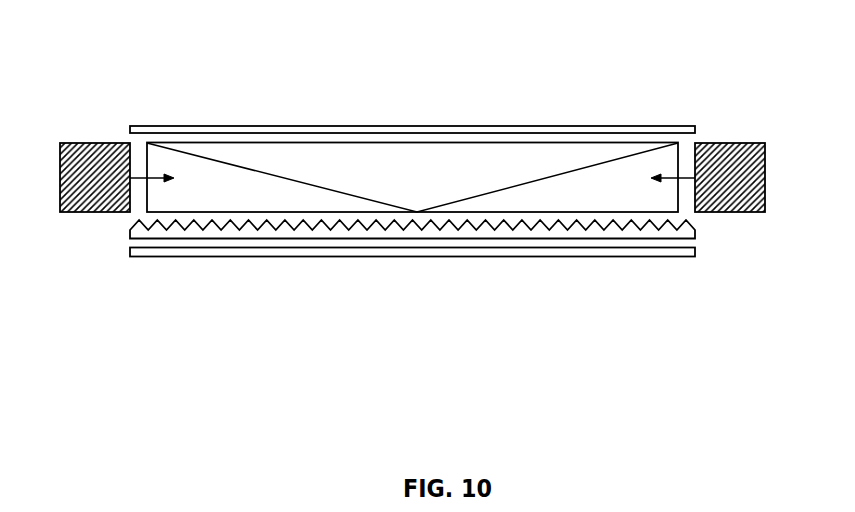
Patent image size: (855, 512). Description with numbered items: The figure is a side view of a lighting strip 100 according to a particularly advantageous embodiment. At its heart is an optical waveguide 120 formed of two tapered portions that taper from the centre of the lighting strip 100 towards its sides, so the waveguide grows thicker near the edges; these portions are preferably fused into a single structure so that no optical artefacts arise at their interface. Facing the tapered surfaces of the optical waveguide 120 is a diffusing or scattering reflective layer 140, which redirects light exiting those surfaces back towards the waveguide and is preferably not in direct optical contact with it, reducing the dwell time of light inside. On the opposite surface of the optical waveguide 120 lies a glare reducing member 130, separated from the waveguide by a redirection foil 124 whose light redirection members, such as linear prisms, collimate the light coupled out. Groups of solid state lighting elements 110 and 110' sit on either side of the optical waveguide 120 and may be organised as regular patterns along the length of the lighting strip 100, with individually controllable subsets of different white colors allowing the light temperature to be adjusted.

The lighting strip 100 is at (449, 387).
The solid state lighting elements 110 is at (708, 244).
The solid state lighting elements 110' is at (109, 245).
The optical waveguide 120 is at (626, 195).
The redirection foil 124 is at (227, 230).
The glare reducing member 130 is at (163, 255).
The reflective layer 140 is at (190, 127).